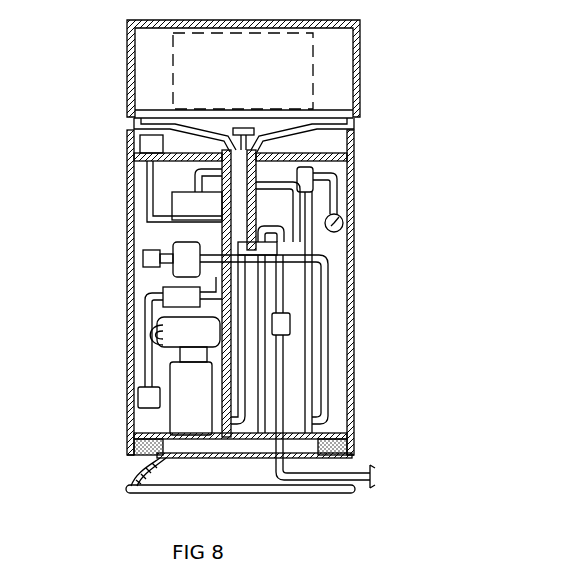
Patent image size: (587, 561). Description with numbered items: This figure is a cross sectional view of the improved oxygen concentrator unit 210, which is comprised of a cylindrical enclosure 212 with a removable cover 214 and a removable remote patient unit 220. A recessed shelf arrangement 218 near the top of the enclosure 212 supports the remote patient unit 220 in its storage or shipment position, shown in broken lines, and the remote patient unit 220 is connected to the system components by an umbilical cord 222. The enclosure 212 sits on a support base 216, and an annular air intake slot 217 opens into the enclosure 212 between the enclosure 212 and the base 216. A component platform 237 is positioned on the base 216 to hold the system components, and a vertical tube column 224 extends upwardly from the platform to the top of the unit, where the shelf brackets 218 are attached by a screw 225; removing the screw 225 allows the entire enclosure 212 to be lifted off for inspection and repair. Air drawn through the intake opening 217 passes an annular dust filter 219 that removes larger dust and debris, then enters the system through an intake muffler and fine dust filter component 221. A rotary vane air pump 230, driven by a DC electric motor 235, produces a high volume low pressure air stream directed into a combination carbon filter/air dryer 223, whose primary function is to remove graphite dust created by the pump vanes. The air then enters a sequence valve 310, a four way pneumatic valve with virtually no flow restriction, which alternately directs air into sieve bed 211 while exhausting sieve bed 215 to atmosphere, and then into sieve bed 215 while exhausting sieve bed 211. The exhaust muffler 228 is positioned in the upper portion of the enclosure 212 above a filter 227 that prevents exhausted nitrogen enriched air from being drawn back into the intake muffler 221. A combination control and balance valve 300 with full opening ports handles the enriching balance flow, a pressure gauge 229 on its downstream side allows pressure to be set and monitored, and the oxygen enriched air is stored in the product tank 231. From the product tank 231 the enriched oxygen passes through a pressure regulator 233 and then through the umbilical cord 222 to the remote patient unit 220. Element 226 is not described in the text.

The oxygen concentrator unit 210 is at (382, 31).
The removable cover 214 is at (128, 62).
The remote patient unit 220 is at (313, 80).
The screw 225 is at (134, 113).
The recessed shelf arrangement 218 is at (349, 140).
The exhaust muffler 228 is at (140, 143).
The filter 227 is at (350, 155).
The vertical tube column 224 is at (196, 181).
The plate 226 is at (172, 205).
The combination control and balance valve 300 is at (314, 180).
The pressure gauge 229 is at (344, 222).
The sieve bed 211 is at (132, 240).
The sieve bed 215 is at (330, 254).
The sequence valve 310 is at (143, 260).
The cylindrical enclosure 212 is at (352, 290).
The carbon filter/air dryer 223 is at (163, 298).
The product tank 231 is at (315, 315).
The pressure regulator 233 is at (291, 328).
The rotary vane air pump 230 is at (155, 347).
The DC electric motor 235 is at (170, 373).
The intake muffler and fine dust filter component 221 is at (138, 398).
The component platform 237 is at (150, 412).
The annular dust filter 219 is at (143, 437).
The annular air intake slot 217 is at (140, 478).
The support base 216 is at (130, 490).
The umbilical cord 222 is at (366, 468).